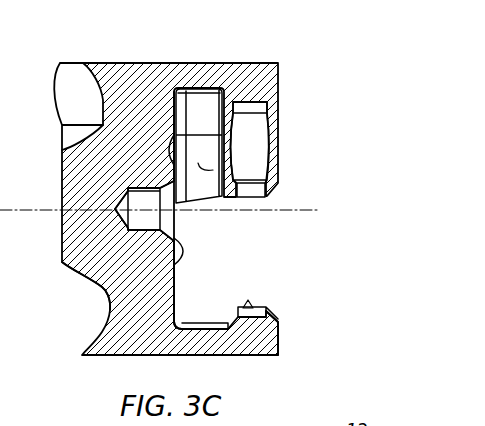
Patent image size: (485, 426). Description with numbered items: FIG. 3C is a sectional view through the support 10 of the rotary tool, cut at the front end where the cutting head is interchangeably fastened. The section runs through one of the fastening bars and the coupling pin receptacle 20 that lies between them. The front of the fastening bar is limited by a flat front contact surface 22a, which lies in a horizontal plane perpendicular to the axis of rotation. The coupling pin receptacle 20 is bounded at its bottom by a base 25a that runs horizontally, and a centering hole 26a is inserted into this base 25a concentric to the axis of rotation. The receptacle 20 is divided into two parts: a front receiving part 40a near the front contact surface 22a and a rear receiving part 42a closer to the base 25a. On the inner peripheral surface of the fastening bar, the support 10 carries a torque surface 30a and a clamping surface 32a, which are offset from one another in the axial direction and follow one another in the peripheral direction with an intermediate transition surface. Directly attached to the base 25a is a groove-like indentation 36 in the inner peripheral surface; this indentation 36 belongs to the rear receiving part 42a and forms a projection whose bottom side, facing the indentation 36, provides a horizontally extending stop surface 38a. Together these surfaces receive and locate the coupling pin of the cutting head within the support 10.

The support 10 is at (322, 54).
The coupling pin receptacle 20 is at (250, 239).
The front contact surface 22a is at (279, 338).
The base 25a is at (102, 288).
The centering hole 26a is at (144, 197).
The torque surface 30a is at (213, 170).
The clamping surface 32a is at (247, 304).
The groove-like indentation 36 is at (180, 323).
The stop surface 38a is at (228, 312).
The front receiving part 40a is at (248, 122).
The rear receiving part 42a is at (202, 110).